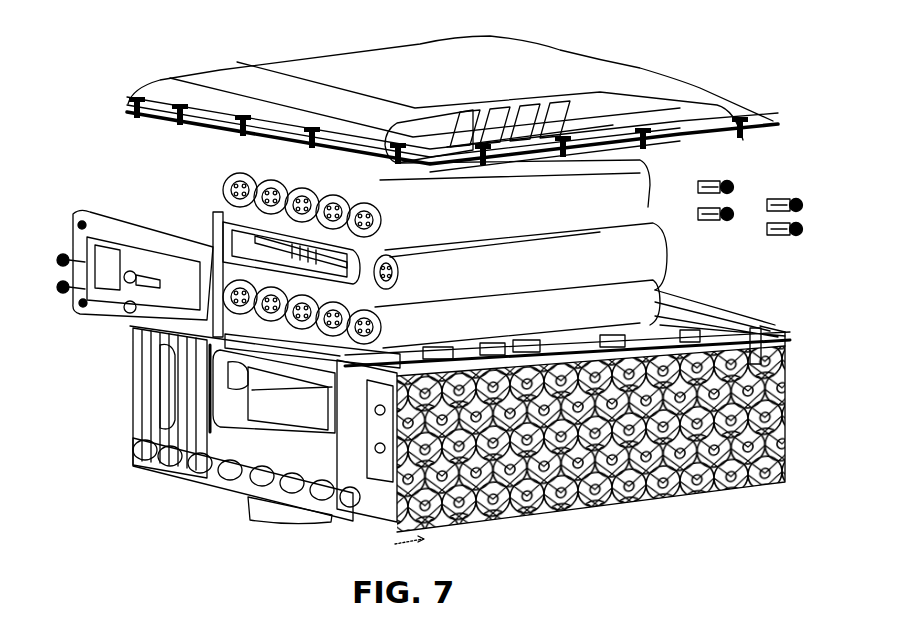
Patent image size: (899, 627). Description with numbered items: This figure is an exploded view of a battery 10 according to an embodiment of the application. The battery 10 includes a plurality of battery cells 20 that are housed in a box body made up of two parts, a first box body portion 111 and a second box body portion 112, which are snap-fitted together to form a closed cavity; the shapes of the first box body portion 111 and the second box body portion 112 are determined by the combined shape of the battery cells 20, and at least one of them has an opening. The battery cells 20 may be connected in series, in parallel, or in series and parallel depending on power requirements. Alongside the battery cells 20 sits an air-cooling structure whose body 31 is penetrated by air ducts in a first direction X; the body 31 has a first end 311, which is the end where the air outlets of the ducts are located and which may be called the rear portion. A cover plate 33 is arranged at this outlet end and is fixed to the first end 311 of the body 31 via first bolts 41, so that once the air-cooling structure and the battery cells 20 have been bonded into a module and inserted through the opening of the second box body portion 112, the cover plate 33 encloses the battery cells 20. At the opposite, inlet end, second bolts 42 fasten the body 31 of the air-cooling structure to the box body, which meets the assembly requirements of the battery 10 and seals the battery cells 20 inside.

The battery 10 is at (90, 21).
The first box body portion 111 is at (652, 74).
The second box body portion 112 is at (776, 395).
The battery cells 20 is at (673, 252).
The body 31 is at (402, 268).
The first end 311 is at (217, 220).
The cover plate 33 is at (72, 238).
The first bolts 41 is at (60, 259).
The second bolts 42 is at (733, 181).